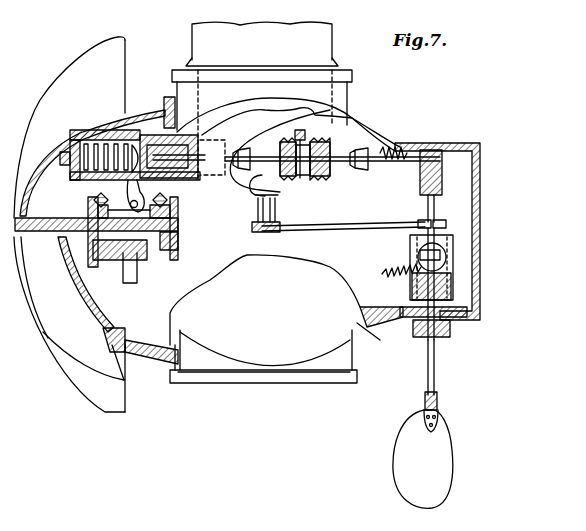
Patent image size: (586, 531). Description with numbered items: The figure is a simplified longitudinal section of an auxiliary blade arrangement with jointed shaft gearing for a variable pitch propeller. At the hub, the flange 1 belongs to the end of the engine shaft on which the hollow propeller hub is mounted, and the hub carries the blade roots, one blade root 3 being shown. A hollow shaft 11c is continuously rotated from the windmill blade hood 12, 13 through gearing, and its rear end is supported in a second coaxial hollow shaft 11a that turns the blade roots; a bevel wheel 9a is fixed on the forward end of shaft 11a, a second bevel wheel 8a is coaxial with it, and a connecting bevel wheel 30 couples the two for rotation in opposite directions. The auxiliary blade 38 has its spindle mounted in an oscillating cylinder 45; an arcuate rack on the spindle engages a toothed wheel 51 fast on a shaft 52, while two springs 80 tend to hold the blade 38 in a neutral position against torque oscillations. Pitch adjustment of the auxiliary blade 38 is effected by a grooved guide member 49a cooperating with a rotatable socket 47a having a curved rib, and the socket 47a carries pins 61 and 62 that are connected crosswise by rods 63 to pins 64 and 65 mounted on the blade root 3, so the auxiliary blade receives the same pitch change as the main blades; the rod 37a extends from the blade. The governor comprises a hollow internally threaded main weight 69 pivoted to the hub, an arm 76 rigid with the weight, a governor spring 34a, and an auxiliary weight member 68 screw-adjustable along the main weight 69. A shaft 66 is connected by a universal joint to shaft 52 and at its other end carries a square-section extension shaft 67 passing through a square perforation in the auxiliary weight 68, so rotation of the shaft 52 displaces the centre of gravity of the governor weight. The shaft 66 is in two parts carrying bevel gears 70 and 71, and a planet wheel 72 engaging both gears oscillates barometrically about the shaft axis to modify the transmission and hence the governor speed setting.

The flange 1 is at (362, 340).
The blade root 3 is at (226, 240).
The bevel wheel 8a is at (104, 258).
The bevel wheel 9a is at (158, 250).
The second hollow shaft 11a is at (170, 241).
The hollow shaft 11c is at (72, 248).
The windmill blade hood 12 is at (70, 366).
The windmill blade hood 13 is at (105, 408).
The connecting bevel wheel 30 is at (141, 262).
The governor spring 34a is at (130, 163).
The float rod 37a is at (438, 371).
The auxiliary blade 38 is at (442, 455).
The oscillating cylinder 45 is at (460, 332).
The rotatable socket 47a is at (453, 287).
The grooved guide member 49a is at (458, 303).
The toothed wheel 51 is at (447, 139).
The shaft 52 is at (412, 152).
The pin 61 is at (440, 222).
The pin 62 is at (427, 223).
The rod 63 is at (340, 230).
The pin 64 is at (278, 215).
The pin 65 is at (257, 213).
The shaft 66 is at (352, 152).
The extension shaft 67 is at (176, 192).
The auxiliary weight member 68 is at (210, 186).
The main weight 69 is at (146, 140).
The bevel gear 70 is at (323, 168).
The bevel gear 71 is at (289, 168).
The planet wheel 72 is at (318, 145).
The lever 76 is at (148, 197).
The spring 80 is at (393, 284).